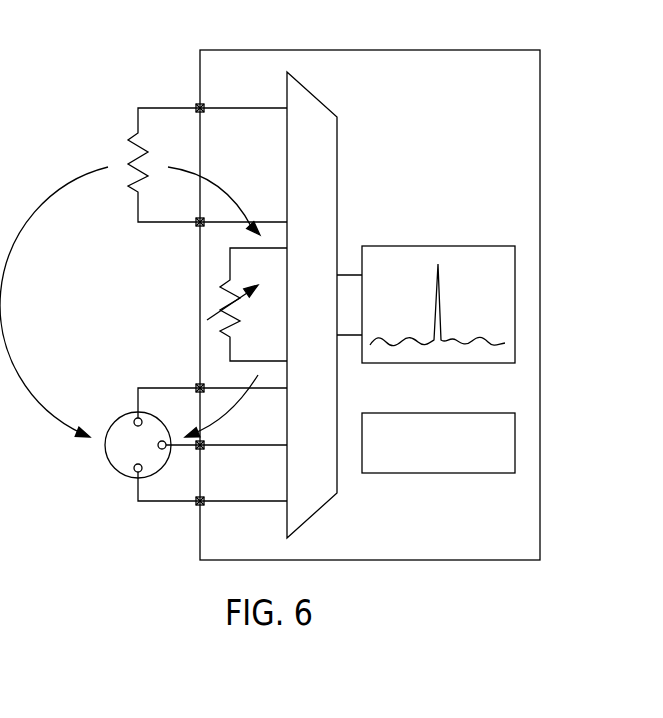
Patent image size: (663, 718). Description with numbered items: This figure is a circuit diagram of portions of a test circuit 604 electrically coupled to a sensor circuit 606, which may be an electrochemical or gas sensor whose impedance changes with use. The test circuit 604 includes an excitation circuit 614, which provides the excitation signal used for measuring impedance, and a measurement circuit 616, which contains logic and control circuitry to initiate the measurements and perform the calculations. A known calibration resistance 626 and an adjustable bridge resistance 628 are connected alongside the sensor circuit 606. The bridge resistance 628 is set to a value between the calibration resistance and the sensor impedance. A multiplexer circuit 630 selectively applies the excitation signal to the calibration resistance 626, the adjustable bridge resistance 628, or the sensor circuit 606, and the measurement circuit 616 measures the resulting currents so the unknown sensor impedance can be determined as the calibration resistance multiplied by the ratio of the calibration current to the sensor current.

The test circuit 604 is at (370, 50).
The multiplexer circuit 630 is at (313, 93).
The calibration resistance 626 is at (135, 186).
The adjustable bridge resistance 628 is at (228, 277).
The sensor circuit 606 is at (112, 468).
The measurement circuit 616 is at (440, 247).
The excitation circuit 614 is at (437, 413).